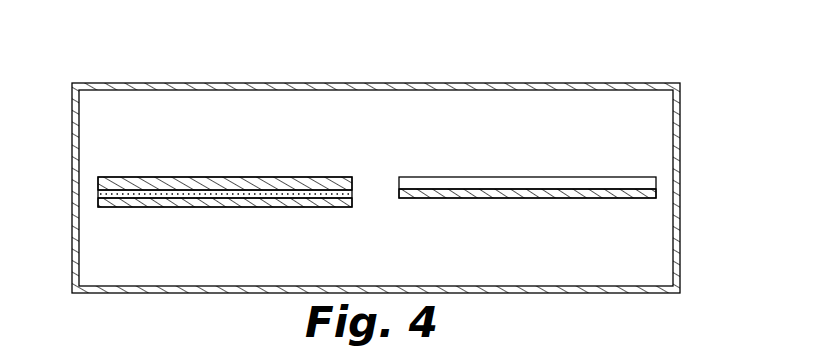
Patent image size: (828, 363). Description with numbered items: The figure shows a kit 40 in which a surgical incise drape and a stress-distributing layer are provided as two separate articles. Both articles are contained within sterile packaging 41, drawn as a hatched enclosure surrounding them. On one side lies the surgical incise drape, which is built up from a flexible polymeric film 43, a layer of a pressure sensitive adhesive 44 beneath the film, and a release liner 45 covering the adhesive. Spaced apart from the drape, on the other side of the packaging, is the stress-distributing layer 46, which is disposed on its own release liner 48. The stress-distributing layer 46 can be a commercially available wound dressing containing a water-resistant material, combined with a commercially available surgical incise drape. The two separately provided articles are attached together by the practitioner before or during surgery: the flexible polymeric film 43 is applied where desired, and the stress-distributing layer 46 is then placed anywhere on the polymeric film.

The kit 40 is at (376, 152).
The sterile packaging 41 is at (450, 84).
The flexible polymeric film 43 is at (258, 183).
The layer of a pressure sensitive adhesive 44 is at (253, 195).
The release liner 45 is at (252, 201).
The stress-distributing layer 46 is at (533, 184).
The release liner 48 is at (508, 197).